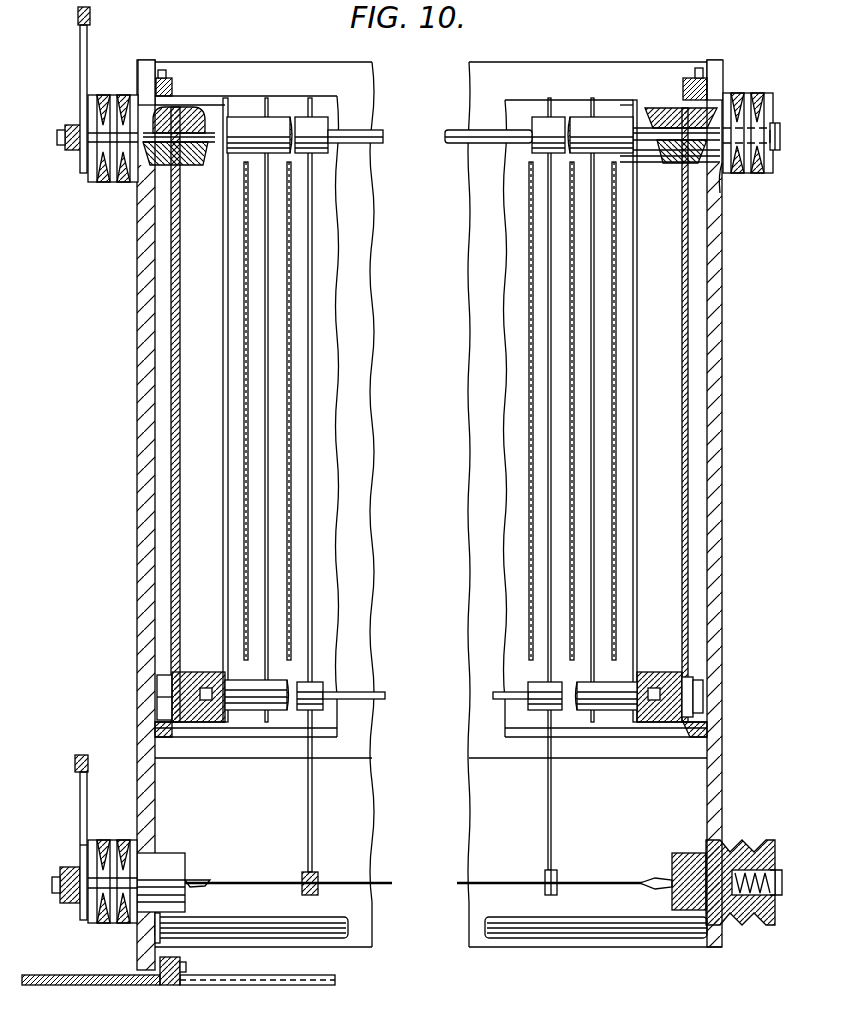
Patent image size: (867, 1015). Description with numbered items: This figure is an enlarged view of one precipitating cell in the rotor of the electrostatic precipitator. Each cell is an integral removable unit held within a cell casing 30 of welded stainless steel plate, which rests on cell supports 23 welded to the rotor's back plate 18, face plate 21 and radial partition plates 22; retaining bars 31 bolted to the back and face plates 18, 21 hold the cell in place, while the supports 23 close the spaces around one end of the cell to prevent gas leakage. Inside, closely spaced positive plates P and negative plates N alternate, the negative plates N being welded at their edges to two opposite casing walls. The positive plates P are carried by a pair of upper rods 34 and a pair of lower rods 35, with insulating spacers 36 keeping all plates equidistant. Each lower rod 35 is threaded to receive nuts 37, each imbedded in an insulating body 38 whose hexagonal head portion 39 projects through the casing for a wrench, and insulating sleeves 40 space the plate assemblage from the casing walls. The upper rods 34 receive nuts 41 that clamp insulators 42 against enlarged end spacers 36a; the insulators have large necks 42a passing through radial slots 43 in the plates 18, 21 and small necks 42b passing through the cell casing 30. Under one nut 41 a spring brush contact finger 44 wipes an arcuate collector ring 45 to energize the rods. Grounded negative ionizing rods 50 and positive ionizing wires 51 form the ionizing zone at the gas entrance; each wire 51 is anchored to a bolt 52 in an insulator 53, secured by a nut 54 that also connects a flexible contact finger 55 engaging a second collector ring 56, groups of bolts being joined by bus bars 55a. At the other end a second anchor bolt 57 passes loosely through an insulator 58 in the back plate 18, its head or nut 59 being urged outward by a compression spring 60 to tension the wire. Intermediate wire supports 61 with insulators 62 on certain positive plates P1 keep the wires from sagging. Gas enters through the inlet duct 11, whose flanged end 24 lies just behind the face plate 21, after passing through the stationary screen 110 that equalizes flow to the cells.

The inlet duct 11 is at (95, 985).
The stationary screen 110 is at (255, 985).
The back plate 18 is at (722, 440).
The face plate 21 is at (137, 421).
The radial partition plates 22 is at (478, 552).
The cell supports 23 is at (218, 750).
The flanged end 24 is at (160, 985).
The cell casing 30 is at (180, 301).
The retaining bars 31 is at (170, 94).
The rods 34 is at (383, 140).
The rods 35 is at (325, 682).
The insulating spacers 36 is at (328, 118).
The enlarged end spacers 36a is at (225, 100).
The nuts 37 is at (214, 689).
The insulating body 38 is at (688, 690).
The hexagonal head portion 39 is at (700, 695).
The insulating sleeves 40 is at (690, 735).
The nuts 41 is at (68, 148).
The insulators 42 is at (110, 183).
The large necks 42a is at (722, 195).
The small necks 42b is at (686, 175).
The slots 43 is at (140, 76).
The brush contact finger 44 is at (80, 47).
The collector ring 45 is at (78, 14).
The negative ionizing rods 50 is at (348, 923).
The positive ionizing wires 51 is at (545, 883).
The anchor bolt 52 is at (188, 880).
The insulator 53 is at (110, 925).
The nut 54 is at (62, 895).
The brush contact finger 55 is at (80, 813).
The bus bars 55a is at (80, 855).
The second collector ring 56 is at (75, 763).
The second anchor bolt 57 is at (652, 880).
The insulator 58 is at (745, 850).
The head or nut 59 is at (778, 870).
The compression spring 60 is at (778, 890).
The intermediate wire supports 61 is at (310, 801).
The insulators 62 is at (318, 875).
The positive plates P is at (267, 423).
The negative plates N is at (289, 462).
The positive plates P1 is at (312, 493).